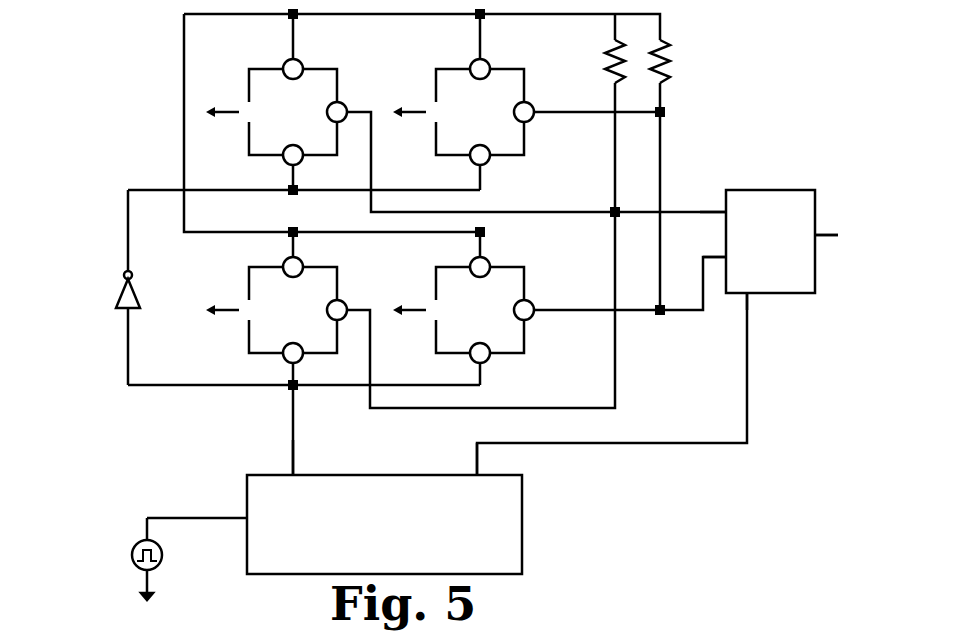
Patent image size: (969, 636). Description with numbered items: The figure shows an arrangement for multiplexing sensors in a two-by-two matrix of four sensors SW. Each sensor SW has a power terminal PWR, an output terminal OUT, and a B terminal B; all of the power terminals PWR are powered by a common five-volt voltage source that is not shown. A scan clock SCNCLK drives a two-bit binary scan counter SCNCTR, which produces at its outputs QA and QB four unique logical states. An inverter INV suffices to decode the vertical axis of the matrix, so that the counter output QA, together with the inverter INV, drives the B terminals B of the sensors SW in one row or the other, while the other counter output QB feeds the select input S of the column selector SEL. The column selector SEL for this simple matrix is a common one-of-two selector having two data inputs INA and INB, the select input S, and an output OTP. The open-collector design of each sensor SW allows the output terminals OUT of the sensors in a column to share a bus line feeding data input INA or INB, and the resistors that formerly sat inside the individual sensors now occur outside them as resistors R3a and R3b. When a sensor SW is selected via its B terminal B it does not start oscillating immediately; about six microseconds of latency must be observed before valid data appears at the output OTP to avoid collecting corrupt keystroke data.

The sensor SW is at (365, 211).
The power terminal PWR is at (495, 254).
The output terminal OUT is at (536, 298).
The B terminal B is at (467, 368).
The resistor R3A R3a is at (610, 56).
The resistor R3B R3b is at (670, 52).
The inverter INV is at (135, 302).
The column selector SEL is at (753, 190).
The data input INA is at (730, 213).
The data input INB is at (732, 258).
The output OTP is at (803, 236).
The select input S is at (746, 291).
The scan counter SCNCTR is at (407, 457).
The output QA is at (290, 464).
The output QB is at (482, 461).
The scan clock SCNCLK is at (134, 547).